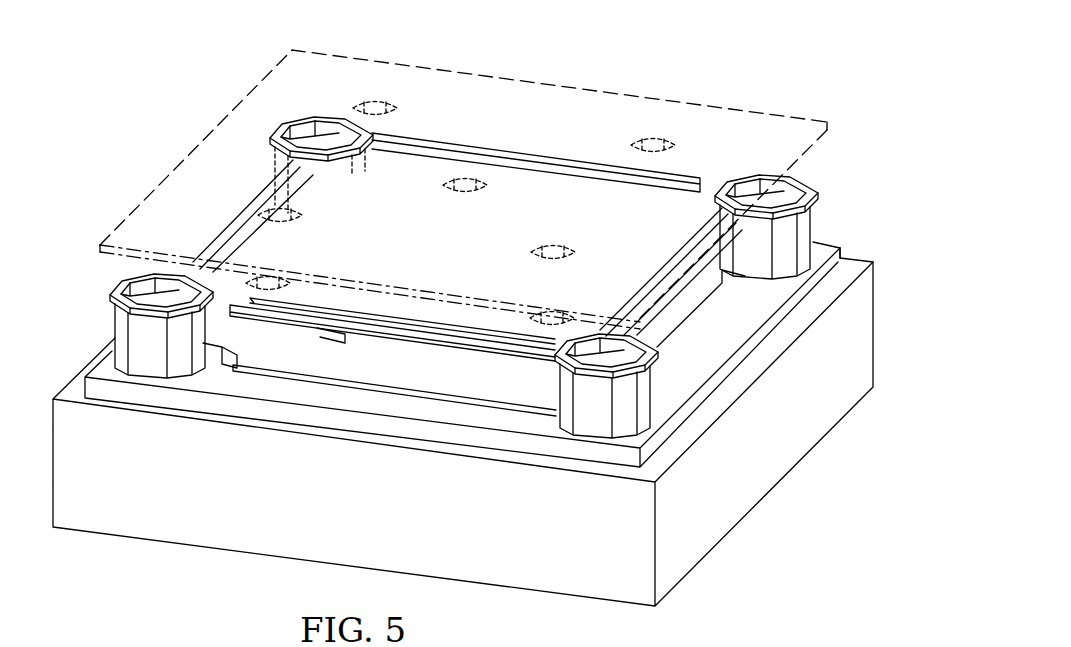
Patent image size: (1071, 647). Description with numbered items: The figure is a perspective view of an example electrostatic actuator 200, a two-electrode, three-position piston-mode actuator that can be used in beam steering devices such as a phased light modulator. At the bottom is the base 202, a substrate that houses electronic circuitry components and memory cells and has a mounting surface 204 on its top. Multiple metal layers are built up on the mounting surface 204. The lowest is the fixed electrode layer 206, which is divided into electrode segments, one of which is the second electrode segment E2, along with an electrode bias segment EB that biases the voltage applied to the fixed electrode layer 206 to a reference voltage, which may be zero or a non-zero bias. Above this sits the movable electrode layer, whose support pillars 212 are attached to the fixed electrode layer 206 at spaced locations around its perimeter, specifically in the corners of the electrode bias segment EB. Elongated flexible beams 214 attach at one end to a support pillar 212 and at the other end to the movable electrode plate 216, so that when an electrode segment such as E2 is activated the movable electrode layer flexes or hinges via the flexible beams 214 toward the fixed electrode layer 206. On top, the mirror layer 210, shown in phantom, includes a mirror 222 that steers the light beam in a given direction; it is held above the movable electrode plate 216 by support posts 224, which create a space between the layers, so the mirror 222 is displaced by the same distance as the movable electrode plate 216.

The electrostatic actuator 200 is at (178, 68).
The base 202 is at (760, 497).
The mounting surface 204 is at (764, 362).
The fixed electrode layer 206 is at (857, 241).
The electrode bias segment EB is at (831, 230).
The mirror layer 210 is at (516, 181).
The support pillars 212 is at (113, 308).
The flexible beams 214 is at (437, 152).
The movable electrode plate 216 is at (583, 190).
The mirror 222 is at (553, 93).
The support posts 224 is at (263, 268).
The second electrode segment E2 is at (686, 308).